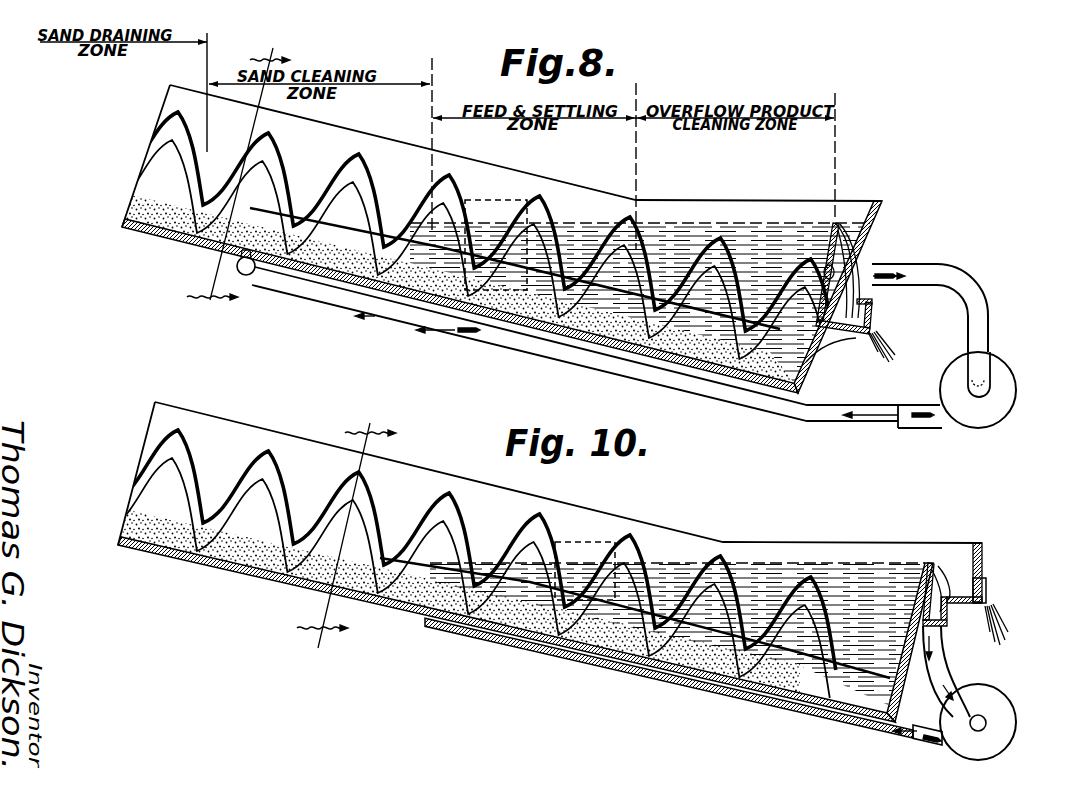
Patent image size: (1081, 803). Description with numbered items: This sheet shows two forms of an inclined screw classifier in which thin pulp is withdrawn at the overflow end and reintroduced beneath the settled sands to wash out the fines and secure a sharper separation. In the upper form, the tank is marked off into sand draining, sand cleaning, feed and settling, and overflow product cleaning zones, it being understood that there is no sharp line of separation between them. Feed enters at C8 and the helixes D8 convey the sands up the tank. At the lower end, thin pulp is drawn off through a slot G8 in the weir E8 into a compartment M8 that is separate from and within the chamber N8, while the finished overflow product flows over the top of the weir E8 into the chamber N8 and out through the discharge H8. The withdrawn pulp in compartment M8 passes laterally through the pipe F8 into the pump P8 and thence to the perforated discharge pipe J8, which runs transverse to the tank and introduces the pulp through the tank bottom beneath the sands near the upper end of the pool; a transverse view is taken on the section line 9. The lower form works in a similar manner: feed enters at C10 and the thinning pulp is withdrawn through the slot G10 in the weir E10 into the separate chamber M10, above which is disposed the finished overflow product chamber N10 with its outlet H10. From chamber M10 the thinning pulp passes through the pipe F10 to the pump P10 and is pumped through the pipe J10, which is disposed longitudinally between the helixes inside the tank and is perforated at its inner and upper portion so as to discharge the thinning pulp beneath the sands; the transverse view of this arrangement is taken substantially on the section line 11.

In FIG. 8, the helixes D8 is at (360, 156).
In FIG. 8, the feed C8 is at (502, 198).
In FIG. 8, the slot G8 is at (827, 253).
In FIG. 8, the weir E8 is at (838, 223).
In FIG. 8, the compartment M8 is at (847, 257).
In FIG. 8, the chamber N8 is at (873, 250).
In FIG. 8, the discharge H8 is at (870, 326).
In FIG. 8, the pipe F8 is at (1000, 283).
In FIG. 8, the pump P8 is at (1003, 405).
In FIG. 8, the perforated discharge pipe J8 is at (253, 280).
In FIG. 8, the section line 9- 9 is at (238, 174).
In FIG. 10, the feed C10 is at (600, 540).
In FIG. 10, the slot G10 is at (920, 598).
In FIG. 10, the weir E10 is at (930, 562).
In FIG. 10, the separate chamber M10 is at (937, 623).
In FIG. 10, the finished overflow product chamber N10 is at (983, 567).
In FIG. 10, the outlet H10 is at (988, 597).
In FIG. 10, the pipe F10 is at (943, 668).
In FIG. 10, the pump P10 is at (1003, 725).
In FIG. 10, the pipe J10 is at (433, 620).
In FIG. 10, the section line 11- 11 is at (346, 536).